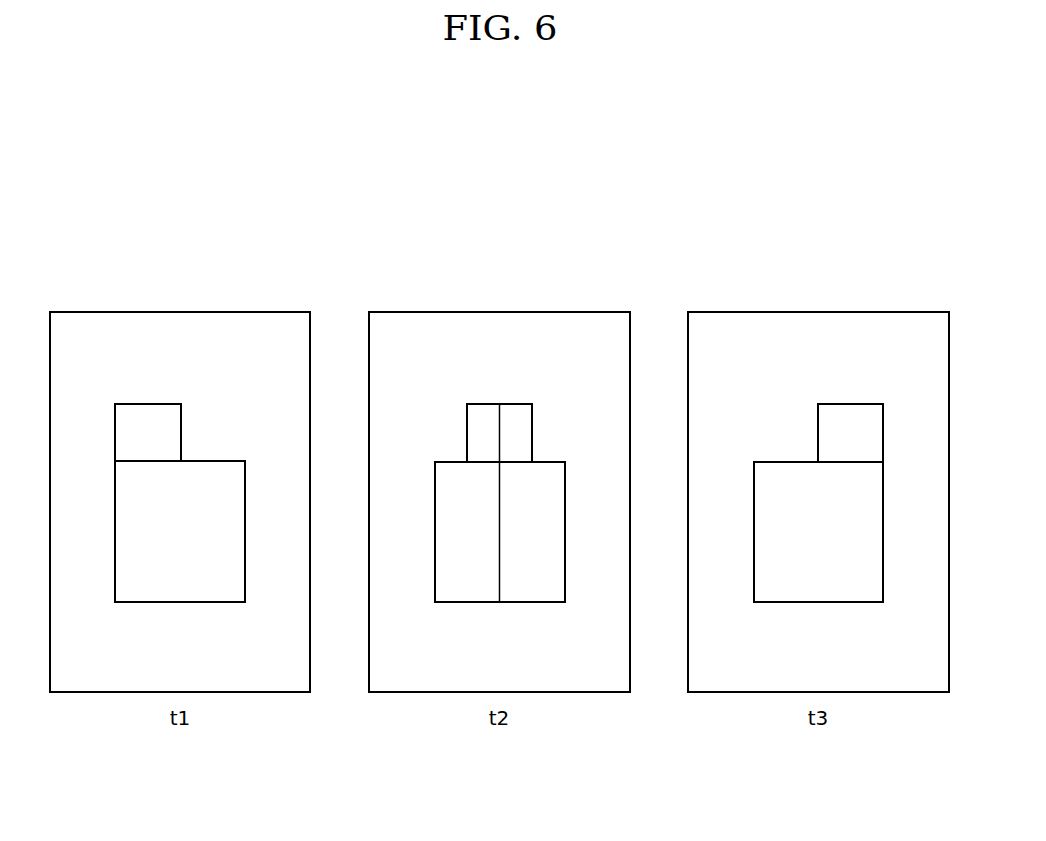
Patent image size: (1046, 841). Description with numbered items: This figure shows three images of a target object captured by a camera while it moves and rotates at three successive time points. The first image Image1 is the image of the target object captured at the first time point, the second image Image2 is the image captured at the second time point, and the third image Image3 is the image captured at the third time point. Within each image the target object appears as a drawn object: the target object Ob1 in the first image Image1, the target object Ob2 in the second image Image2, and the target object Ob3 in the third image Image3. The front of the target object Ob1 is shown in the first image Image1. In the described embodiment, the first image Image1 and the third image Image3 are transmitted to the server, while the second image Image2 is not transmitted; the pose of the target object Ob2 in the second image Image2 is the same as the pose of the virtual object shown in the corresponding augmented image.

The first image Image1 is at (180, 487).
The second image Image2 is at (499, 487).
The third image Image3 is at (818, 487).
The target object Ob1 is at (182, 432).
The target object Ob2 is at (466, 433).
The target object Ob3 is at (818, 433).